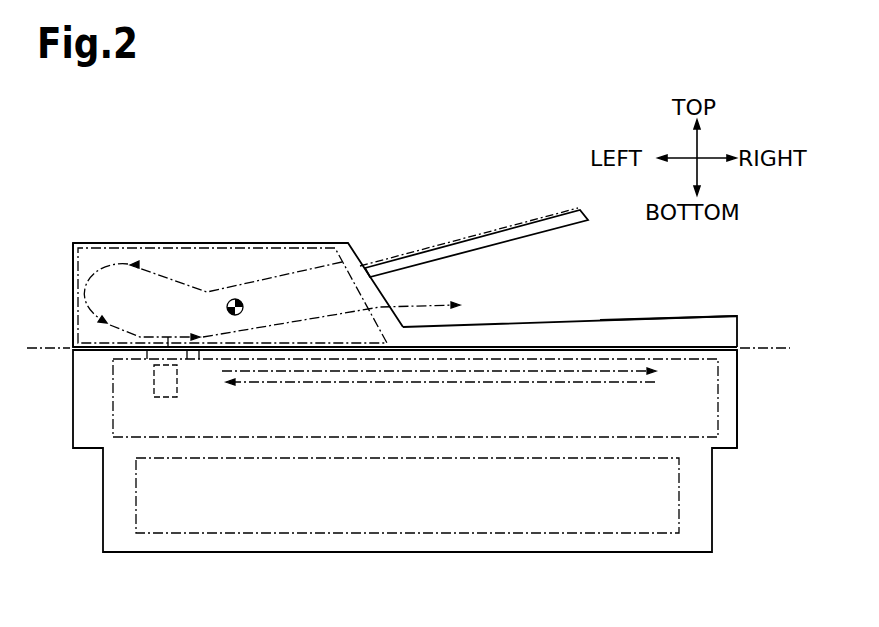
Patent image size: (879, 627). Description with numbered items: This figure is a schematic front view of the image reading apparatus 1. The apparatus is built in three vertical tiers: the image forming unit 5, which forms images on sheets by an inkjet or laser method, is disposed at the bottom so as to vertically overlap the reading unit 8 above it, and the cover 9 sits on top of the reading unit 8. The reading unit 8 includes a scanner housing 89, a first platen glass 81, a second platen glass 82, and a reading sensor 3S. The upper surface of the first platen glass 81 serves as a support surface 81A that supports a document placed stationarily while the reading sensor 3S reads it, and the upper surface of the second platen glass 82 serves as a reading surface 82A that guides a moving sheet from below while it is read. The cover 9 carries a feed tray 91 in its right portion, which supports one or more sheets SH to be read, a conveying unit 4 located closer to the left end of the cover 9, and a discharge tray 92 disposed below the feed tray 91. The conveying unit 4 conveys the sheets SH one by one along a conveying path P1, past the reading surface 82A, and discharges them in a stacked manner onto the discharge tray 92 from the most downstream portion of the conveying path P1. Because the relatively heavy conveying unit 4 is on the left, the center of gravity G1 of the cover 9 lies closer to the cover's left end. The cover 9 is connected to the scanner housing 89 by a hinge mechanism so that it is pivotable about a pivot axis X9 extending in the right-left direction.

The image reading apparatus 1 is at (355, 192).
The conveying unit 4 is at (237, 246).
The image forming unit 5 is at (100, 502).
The reading unit 8 is at (70, 412).
The cover 9 is at (68, 262).
The first platen glass 81 is at (688, 367).
The support surface 81A is at (613, 346).
The second platen glass 82 is at (144, 366).
The reading surface 82A is at (133, 334).
The scanner housing 89 is at (745, 386).
The feed tray 91 is at (501, 237).
The discharge tray 92 is at (548, 322).
The reading sensor 3S is at (165, 388).
The center of gravity G1 is at (245, 302).
The conveying path P1 is at (346, 315).
The sheets SH is at (440, 243).
The pivot axis X9 is at (425, 350).